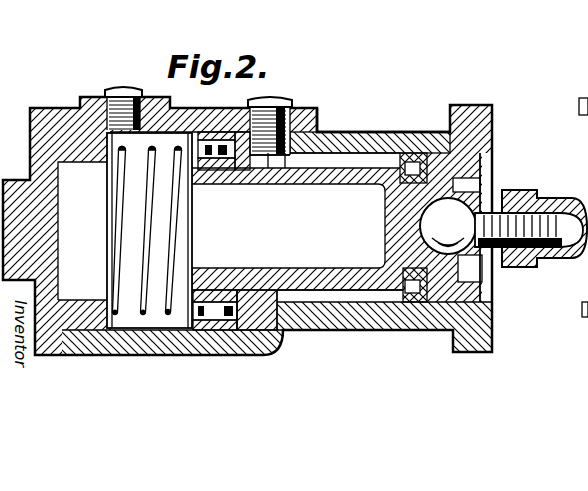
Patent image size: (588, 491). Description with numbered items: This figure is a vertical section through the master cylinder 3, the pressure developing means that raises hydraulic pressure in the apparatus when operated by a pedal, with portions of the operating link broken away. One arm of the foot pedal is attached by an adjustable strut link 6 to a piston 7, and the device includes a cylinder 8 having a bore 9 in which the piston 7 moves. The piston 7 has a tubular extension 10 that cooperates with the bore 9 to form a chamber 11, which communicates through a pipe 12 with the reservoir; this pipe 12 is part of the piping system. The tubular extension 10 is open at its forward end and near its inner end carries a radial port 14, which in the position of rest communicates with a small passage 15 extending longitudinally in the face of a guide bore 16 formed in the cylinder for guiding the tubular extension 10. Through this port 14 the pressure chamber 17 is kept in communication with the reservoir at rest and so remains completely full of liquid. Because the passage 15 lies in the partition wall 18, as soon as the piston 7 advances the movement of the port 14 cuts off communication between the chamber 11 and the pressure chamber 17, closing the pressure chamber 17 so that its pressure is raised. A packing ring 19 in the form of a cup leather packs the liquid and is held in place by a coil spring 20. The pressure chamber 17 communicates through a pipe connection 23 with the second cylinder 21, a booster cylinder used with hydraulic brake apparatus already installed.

The master cylinder 3 is at (460, 105).
The adjustable strut link 6 is at (550, 258).
The piston 7 is at (467, 167).
The cylinder 8 is at (318, 130).
The bore 9 is at (390, 153).
The tubular extension 10 is at (308, 272).
The chamber 11 is at (347, 160).
The pipe 12 is at (288, 97).
The radial port 14 is at (257, 152).
The small passage 15 is at (268, 153).
The guide bore 16 is at (252, 290).
The pressure chamber 17 is at (140, 212).
The partition wall 18 is at (228, 295).
The packing ring 19 is at (228, 165).
The coil spring 20 is at (178, 241).
The second cylinder 21 is at (230, 6).
The pipe connection 23 is at (131, 88).